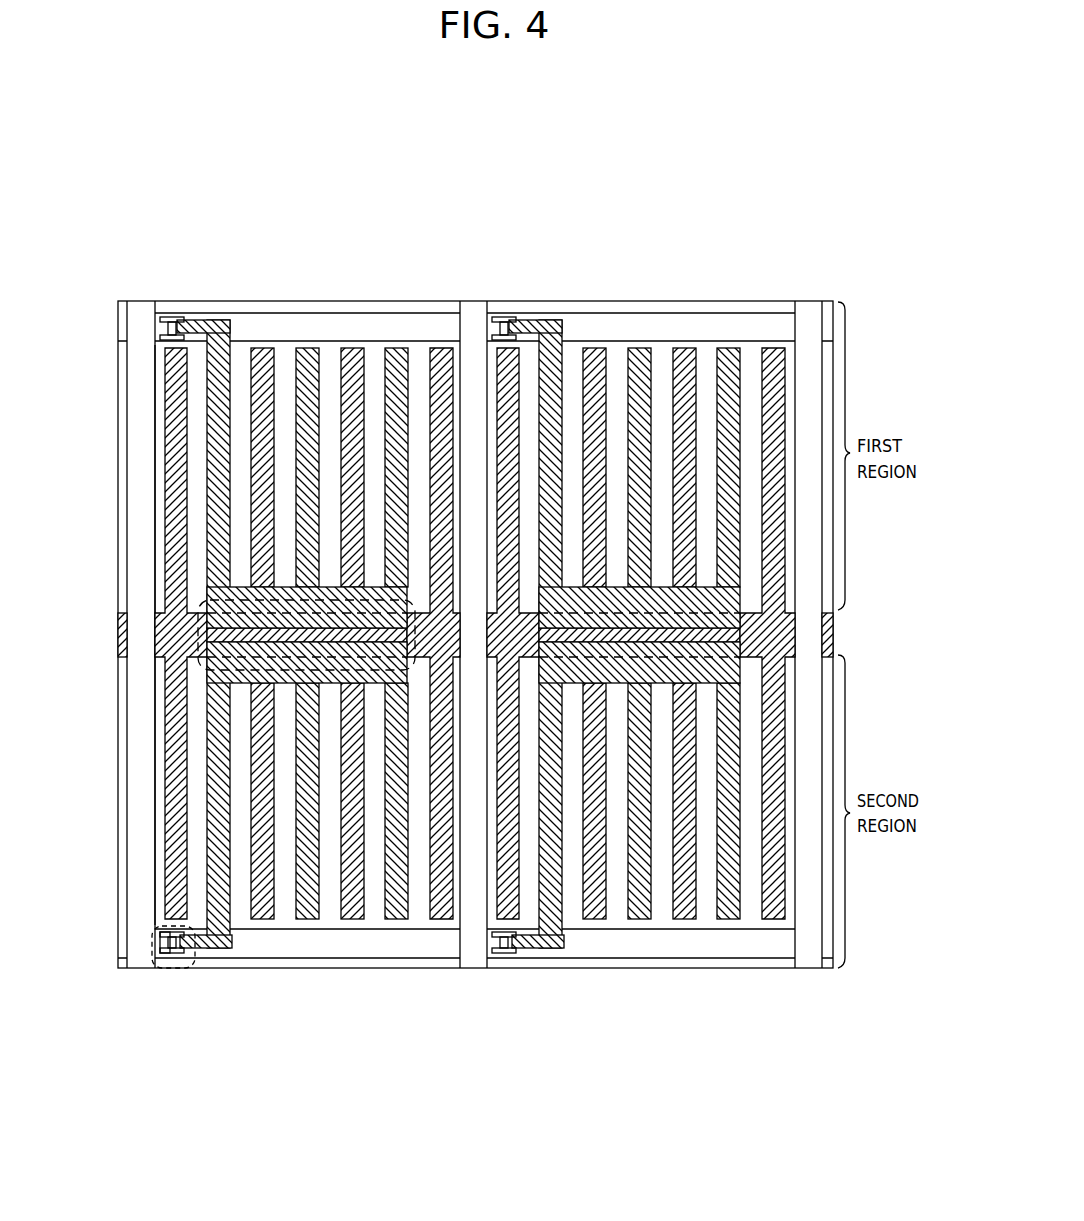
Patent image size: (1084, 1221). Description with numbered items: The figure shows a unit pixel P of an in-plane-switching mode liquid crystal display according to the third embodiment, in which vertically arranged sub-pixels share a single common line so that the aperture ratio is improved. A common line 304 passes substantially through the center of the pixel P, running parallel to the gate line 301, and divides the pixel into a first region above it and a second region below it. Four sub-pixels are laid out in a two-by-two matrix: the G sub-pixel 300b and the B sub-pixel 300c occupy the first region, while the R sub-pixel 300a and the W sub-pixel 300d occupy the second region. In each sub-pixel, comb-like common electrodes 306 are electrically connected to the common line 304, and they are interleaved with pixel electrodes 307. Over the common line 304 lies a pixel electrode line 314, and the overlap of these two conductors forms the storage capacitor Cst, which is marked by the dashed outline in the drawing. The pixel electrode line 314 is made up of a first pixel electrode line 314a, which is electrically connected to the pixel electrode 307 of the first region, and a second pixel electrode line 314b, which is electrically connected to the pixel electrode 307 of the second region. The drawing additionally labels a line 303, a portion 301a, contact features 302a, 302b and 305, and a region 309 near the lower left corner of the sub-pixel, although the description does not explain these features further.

The R sub-pixel 300a is at (236, 706).
The G sub-pixel 300b is at (286, 577).
The B sub-pixel 300c is at (635, 297).
The W sub-pixel 300d is at (627, 976).
The gate line 301 is at (283, 950).
The data line branch / source electrode bar 301a is at (167, 923).
The contact portion 302a is at (163, 940).
The drain connection portion 302b is at (193, 953).
The power line 303 is at (137, 786).
The common line 304 is at (165, 633).
The contact hole / via 305 is at (175, 957).
The common electrode 306 is at (263, 352).
The pixel electrode 307 is at (309, 352).
The thin film transistor contact region 309 is at (150, 952).
The pixel electrode line 314 is at (580, 635).
The first pixel electrode line 314a is at (735, 600).
The second pixel electrode line 314b is at (735, 665).
The storage capacitor Cst is at (200, 605).
The pixel P is at (777, 298).